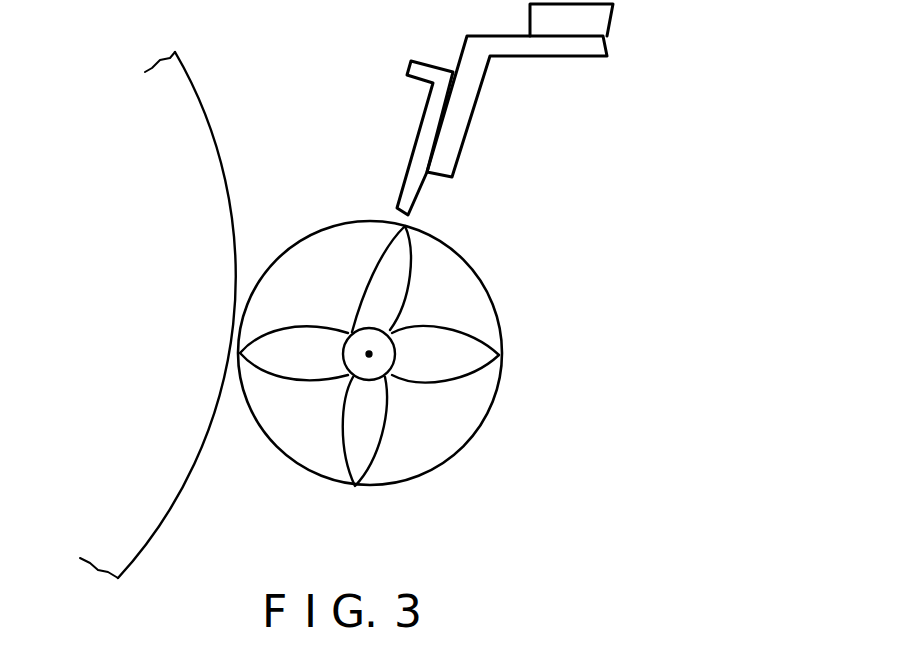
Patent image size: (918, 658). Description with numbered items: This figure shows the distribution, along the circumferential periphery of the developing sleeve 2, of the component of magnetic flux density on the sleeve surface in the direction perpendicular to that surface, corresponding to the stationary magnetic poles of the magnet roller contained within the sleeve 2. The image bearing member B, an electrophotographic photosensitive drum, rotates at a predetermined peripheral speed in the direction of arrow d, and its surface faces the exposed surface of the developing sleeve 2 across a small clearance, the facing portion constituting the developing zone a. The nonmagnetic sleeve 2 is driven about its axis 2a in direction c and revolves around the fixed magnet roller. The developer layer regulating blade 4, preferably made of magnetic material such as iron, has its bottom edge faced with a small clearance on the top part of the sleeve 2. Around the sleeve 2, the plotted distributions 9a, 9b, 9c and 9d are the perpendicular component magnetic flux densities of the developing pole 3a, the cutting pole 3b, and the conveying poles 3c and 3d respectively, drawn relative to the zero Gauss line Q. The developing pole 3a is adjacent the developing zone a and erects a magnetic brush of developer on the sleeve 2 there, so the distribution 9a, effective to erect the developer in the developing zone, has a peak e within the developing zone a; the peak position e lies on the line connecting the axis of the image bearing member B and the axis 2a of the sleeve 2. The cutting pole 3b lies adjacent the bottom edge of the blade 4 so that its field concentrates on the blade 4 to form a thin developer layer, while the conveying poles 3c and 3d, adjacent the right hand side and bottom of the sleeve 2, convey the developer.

The image bearing member B is at (188, 70).
The direction of rotation of the image bearing member d is at (225, 113).
The direction of rotation of the developing sleeve c is at (323, 212).
The developing sleeve 2 is at (357, 220).
The axis of the sleeve 2a is at (368, 350).
The density distribution of the perpendicular component magnetic flux of the develop 9a is at (294, 381).
The density distribution of the perpendicular component magnetic flux of the cutting 9b is at (445, 270).
The density distribution of the perpendicular component magnetic flux of the conveyi 9c is at (490, 331).
The density distribution of the perpendicular component magnetic flux of the conveyi 9d is at (412, 451).
The developing pole 3a is at (277, 375).
The cutting pole 3b is at (413, 262).
The conveying pole 3c is at (470, 337).
The conveying pole 3d is at (385, 453).
The peak of the magnetic flux density e is at (243, 343).
The developing zone a is at (225, 303).
The 0 Gauss line Q is at (397, 357).
The developer layer regulating blade 4 is at (420, 142).